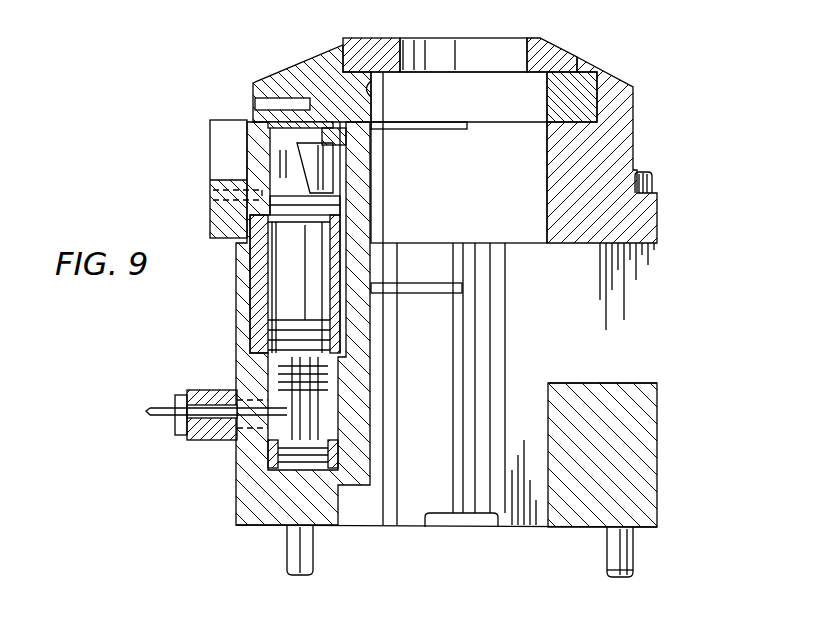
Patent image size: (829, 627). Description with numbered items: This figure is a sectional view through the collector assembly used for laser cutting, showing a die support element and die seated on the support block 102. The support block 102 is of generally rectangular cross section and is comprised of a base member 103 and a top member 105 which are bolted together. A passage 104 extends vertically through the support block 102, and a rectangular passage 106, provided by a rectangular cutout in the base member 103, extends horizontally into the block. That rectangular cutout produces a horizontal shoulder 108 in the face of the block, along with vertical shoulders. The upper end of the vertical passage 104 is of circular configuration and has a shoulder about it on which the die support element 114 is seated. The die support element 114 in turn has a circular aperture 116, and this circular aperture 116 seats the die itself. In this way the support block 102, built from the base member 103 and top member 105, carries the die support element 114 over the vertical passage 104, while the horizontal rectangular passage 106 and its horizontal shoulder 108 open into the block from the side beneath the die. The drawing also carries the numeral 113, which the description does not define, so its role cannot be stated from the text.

The support block 102 is at (600, 58).
The base member 103 is at (633, 448).
The passage 104 is at (500, 207).
The top member 105 is at (607, 163).
The rectangular passage 106 is at (637, 305).
The horizontal shoulder 108 is at (627, 383).
The retaining nut 113 is at (552, 42).
The die support element 114 is at (600, 117).
The circular aperture 116 is at (345, 90).